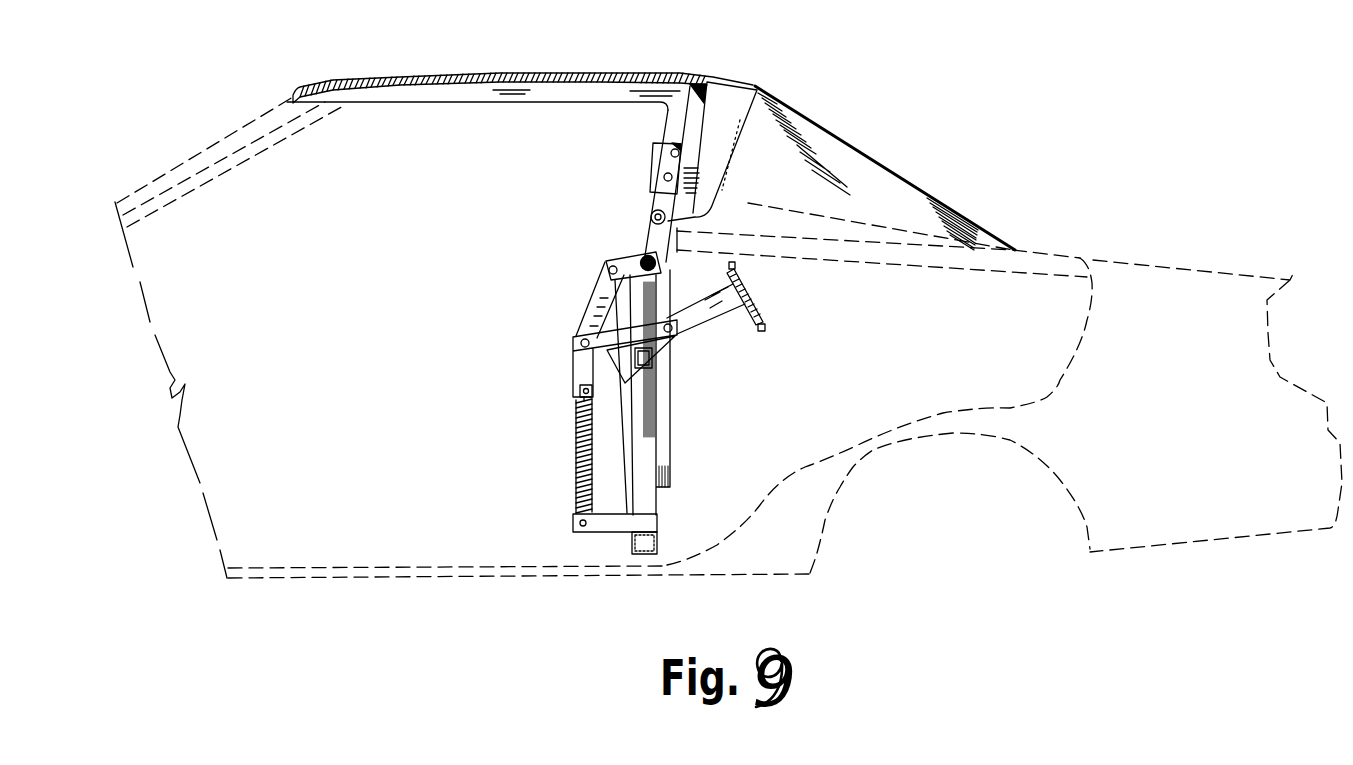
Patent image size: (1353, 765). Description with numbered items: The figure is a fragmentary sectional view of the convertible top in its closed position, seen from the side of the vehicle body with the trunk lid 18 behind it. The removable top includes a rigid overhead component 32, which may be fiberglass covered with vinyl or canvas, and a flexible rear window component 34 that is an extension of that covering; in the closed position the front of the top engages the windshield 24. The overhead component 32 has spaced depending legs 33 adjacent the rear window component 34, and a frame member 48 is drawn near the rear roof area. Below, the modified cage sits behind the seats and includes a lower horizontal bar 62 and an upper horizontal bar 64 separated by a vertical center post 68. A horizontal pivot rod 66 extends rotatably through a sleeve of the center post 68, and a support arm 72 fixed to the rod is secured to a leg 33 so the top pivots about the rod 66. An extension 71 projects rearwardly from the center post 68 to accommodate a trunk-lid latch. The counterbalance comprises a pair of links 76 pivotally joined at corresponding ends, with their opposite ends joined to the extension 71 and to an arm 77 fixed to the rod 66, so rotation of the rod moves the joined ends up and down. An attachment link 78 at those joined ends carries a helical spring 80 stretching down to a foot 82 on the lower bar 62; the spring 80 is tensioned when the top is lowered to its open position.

The trunk lid 18 is at (843, 238).
The windshield 24 is at (207, 153).
The overhead component 32 is at (497, 72).
The depending legs 33 is at (671, 124).
The rear window component 34 is at (837, 138).
The rear roof member 48 is at (728, 158).
The lower horizontal bar 62 is at (657, 537).
The horizontal bar 64 is at (652, 354).
The pivot rod 66 is at (663, 262).
The center post 68 is at (653, 420).
The extension 71 is at (728, 315).
The support arm 72 is at (653, 201).
The links 76 is at (590, 302).
The arm 77 is at (625, 257).
The attachment link 78 is at (578, 384).
The helical spring 80 is at (575, 463).
The foot 82 is at (573, 530).